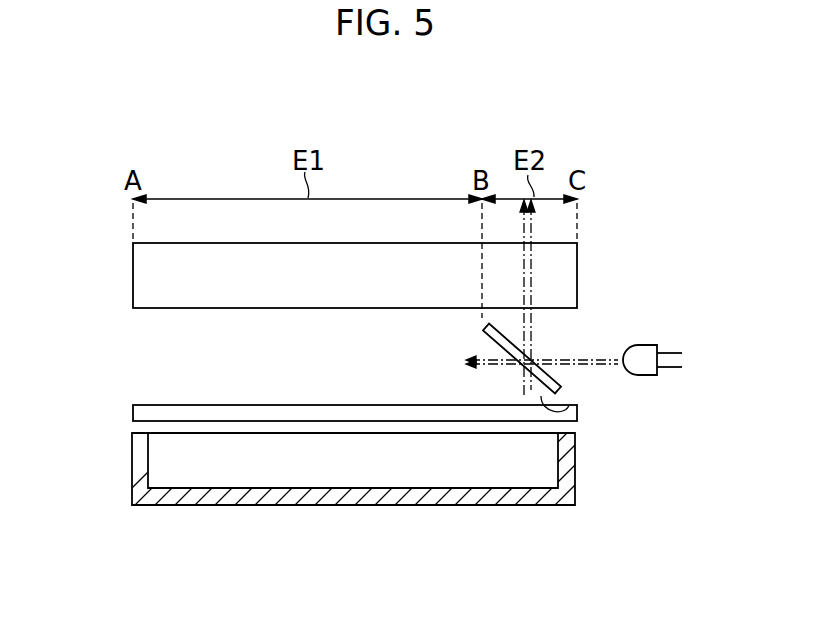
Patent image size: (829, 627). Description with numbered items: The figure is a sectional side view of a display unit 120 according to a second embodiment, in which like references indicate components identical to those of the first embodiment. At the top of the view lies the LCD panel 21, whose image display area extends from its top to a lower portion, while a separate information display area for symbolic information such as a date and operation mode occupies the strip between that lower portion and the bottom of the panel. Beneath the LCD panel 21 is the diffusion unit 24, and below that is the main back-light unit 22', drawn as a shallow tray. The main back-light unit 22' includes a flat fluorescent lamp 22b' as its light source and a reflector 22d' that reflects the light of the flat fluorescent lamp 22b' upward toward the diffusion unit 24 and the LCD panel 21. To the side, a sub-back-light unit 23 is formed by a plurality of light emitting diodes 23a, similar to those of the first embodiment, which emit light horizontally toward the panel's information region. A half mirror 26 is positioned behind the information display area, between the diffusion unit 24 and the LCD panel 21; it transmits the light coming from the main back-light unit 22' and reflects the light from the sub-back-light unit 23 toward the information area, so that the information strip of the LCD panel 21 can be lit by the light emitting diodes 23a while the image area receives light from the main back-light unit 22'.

The display unit 120 is at (602, 145).
The LCD panel 21 is at (578, 272).
The sub-back-light unit 23 is at (631, 350).
The light emitting diode 23a is at (657, 347).
The diffusion unit 24 is at (133, 411).
The half mirror 26 is at (569, 406).
The main back-light unit 22' is at (390, 505).
The flat fluorescent lamp 22b' is at (353, 513).
The reflector 22d' is at (353, 527).